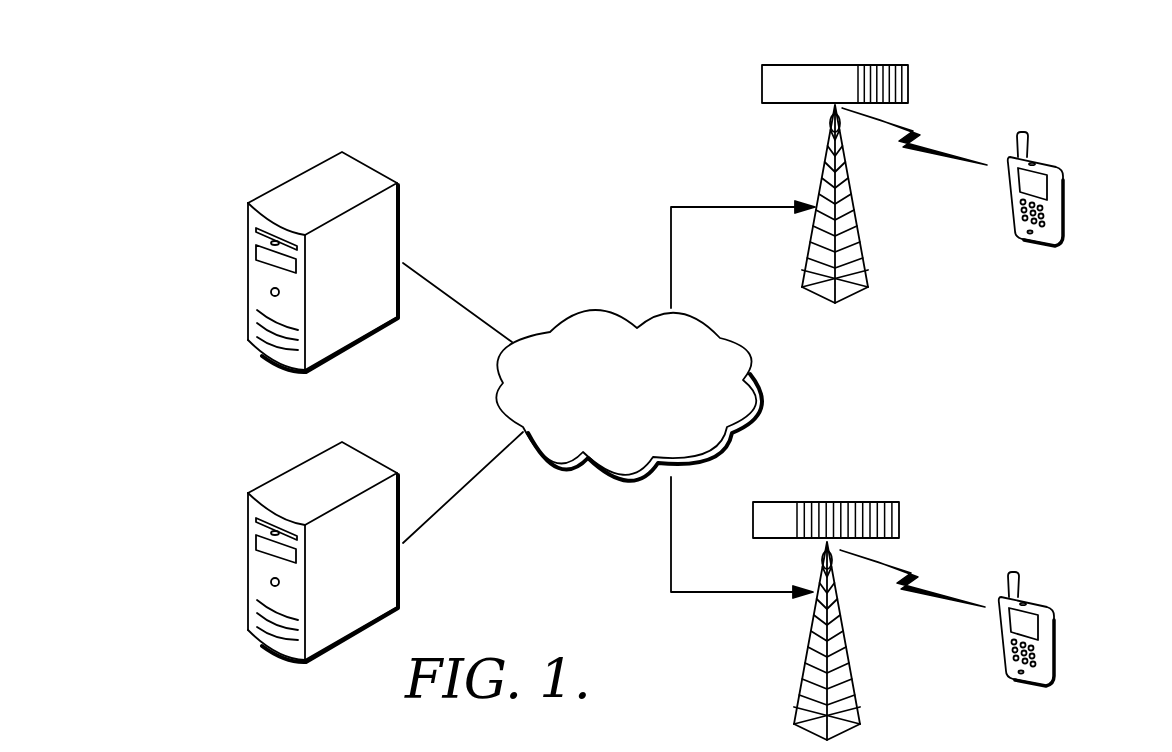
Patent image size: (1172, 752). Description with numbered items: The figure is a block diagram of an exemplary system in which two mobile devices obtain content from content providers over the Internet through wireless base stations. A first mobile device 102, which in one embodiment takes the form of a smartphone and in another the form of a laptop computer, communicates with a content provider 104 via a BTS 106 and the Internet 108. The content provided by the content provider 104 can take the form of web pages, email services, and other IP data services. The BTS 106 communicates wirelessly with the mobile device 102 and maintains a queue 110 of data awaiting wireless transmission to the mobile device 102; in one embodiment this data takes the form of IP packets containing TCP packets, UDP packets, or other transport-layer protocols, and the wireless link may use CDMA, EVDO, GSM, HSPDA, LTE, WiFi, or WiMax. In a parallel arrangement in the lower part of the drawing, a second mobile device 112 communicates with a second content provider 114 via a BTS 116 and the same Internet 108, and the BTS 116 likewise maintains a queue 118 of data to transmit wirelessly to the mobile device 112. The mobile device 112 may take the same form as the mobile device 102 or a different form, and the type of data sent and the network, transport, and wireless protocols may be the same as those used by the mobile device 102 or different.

The first mobile device 102 is at (1050, 160).
The content provider 104 is at (313, 167).
The BTS 106 is at (860, 257).
The Internet 108 is at (595, 308).
The queue 110 is at (850, 63).
The second mobile device 112 is at (1041, 600).
The second content provider 114 is at (313, 457).
The BTS 116 is at (850, 675).
The queue 118 is at (838, 500).